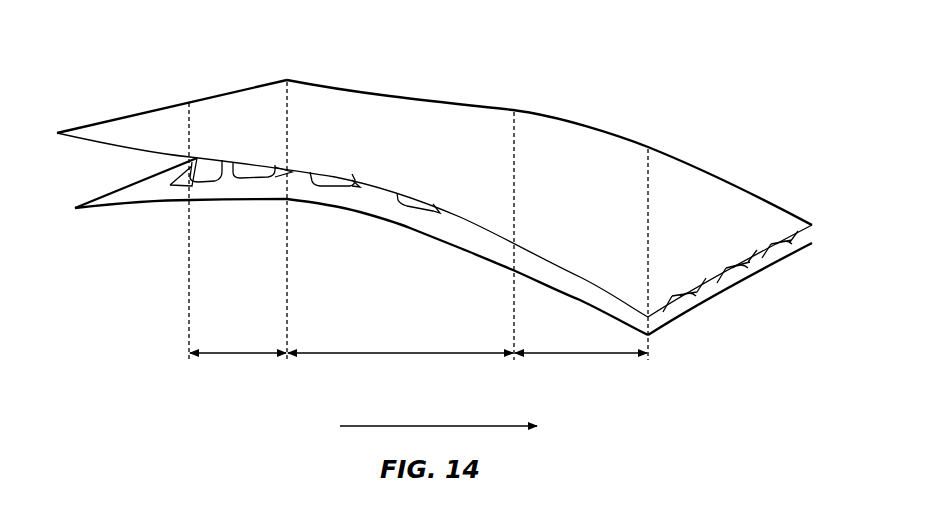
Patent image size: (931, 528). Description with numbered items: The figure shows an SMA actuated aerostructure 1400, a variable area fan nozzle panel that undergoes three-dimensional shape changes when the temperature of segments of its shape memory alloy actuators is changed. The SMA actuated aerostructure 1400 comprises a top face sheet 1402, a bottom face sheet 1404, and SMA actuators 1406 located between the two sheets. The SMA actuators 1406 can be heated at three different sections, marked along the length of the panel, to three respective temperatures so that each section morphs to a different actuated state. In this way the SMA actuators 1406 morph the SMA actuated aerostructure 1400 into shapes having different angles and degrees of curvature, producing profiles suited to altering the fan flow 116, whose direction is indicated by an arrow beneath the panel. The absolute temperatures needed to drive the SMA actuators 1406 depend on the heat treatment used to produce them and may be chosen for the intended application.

The SMA actuated aerostructure 1400 is at (646, 61).
The top face sheet 1402 is at (175, 115).
The bottom face sheet 1404 is at (110, 208).
The SMA actuators 1406 is at (210, 163).
The fan flow 116 is at (490, 423).